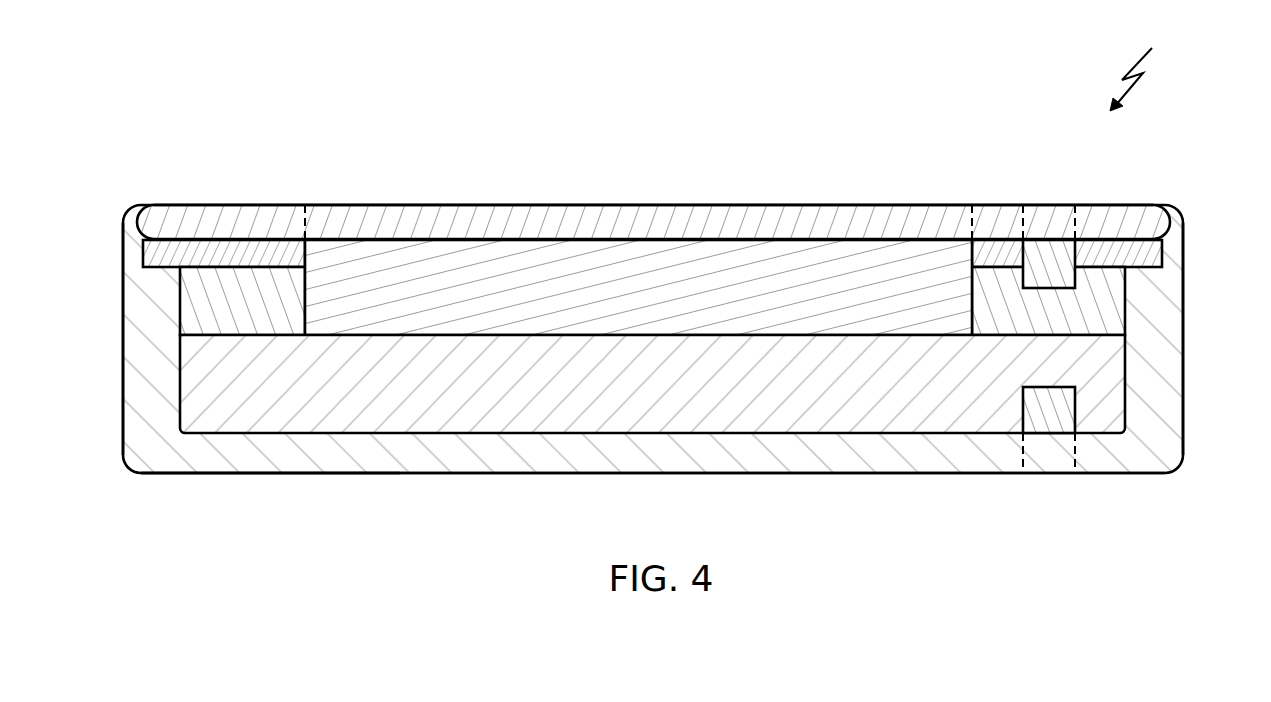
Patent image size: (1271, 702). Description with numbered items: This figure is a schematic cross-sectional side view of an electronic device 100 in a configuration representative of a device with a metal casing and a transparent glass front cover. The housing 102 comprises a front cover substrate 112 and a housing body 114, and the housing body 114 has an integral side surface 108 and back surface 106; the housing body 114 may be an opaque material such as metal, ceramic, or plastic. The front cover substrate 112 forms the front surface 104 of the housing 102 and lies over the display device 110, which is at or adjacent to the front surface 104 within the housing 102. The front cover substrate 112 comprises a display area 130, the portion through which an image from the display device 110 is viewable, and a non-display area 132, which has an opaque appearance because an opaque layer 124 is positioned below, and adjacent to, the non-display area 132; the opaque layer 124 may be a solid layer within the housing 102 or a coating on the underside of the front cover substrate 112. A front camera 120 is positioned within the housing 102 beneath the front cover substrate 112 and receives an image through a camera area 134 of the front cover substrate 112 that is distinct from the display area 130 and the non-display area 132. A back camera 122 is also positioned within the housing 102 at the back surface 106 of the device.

The electronic device 100 is at (1146, 66).
The housing 102 is at (1185, 337).
The front surface 104 is at (485, 205).
The back surface 106 is at (912, 473).
The side surface 108 is at (120, 335).
The display device 110 is at (665, 300).
The front cover substrate 112 is at (615, 205).
The housing body 114 is at (260, 473).
The front camera 120 is at (1023, 258).
The back camera 122 is at (1023, 420).
The opaque layer 124 is at (182, 268).
The display area 130 is at (748, 212).
The non-display area 132 is at (223, 213).
The camera area 134 is at (1055, 212).